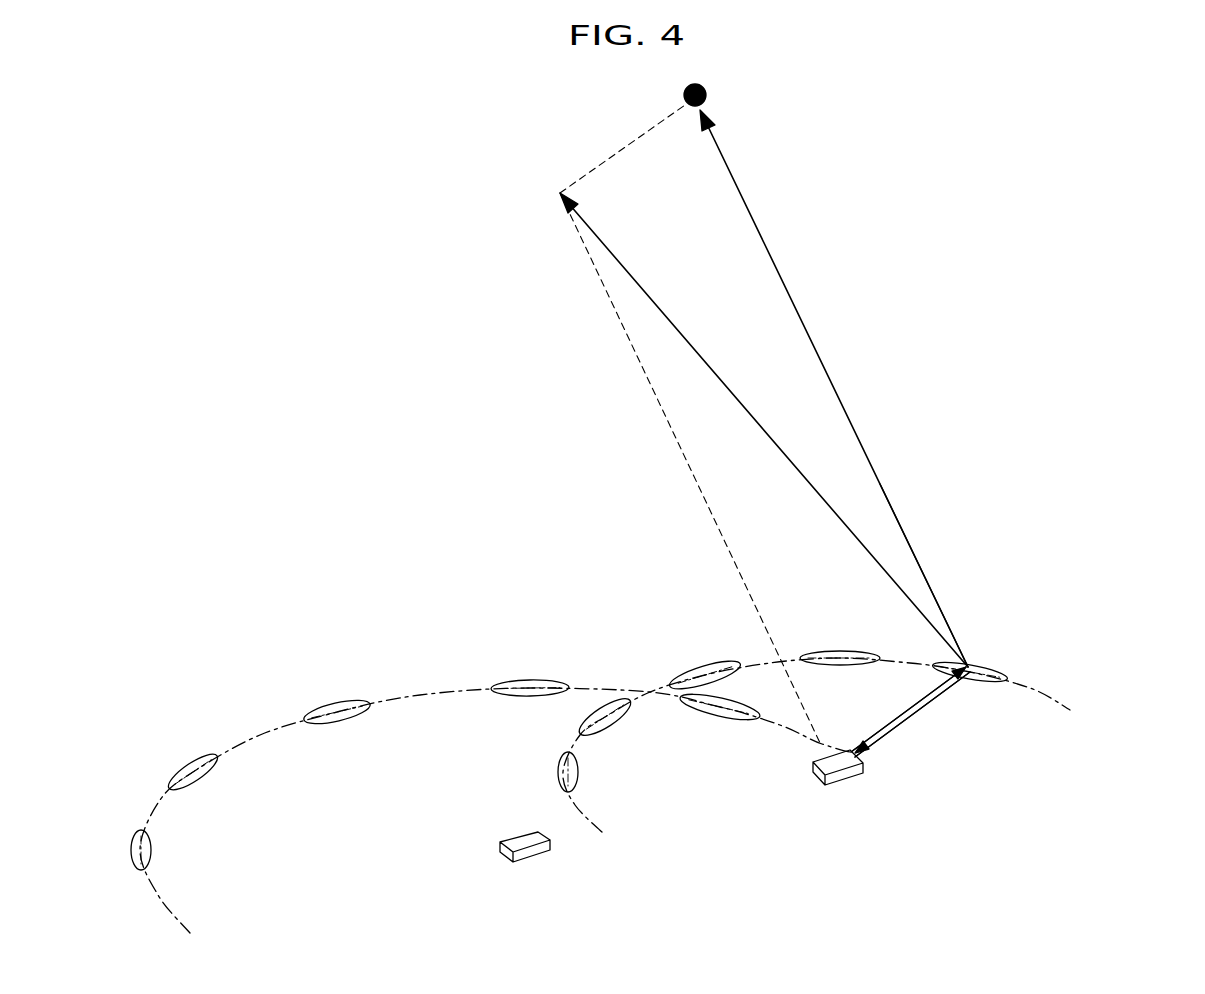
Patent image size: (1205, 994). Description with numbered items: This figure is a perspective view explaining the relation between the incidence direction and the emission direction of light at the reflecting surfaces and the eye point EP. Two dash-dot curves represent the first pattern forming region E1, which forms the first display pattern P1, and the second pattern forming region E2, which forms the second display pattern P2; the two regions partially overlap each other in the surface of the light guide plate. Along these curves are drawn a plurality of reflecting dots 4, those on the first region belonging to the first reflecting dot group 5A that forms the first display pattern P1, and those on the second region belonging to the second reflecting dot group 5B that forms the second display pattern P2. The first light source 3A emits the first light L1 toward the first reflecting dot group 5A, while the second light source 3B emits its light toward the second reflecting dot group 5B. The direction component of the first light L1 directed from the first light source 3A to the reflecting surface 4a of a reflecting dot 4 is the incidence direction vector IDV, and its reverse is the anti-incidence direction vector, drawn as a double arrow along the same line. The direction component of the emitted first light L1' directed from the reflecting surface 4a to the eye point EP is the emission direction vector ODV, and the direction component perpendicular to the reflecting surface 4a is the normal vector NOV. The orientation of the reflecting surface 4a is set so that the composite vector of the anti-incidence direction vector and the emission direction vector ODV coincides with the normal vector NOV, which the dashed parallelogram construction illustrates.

The eye point EP is at (707, 97).
The emission direction vector ODV is at (810, 338).
The normal vector NOV is at (707, 368).
The first light (emitted) L1' is at (922, 538).
The first light L1 is at (910, 753).
The reflecting dot 4 is at (612, 721).
The first reflecting dot group 5A is at (989, 662).
The second reflecting dot group 5B is at (322, 688).
The reflecting surface 4a is at (987, 681).
The incidence direction vector IDV is at (919, 692).
The first pattern forming region E1 is at (875, 726).
The first display pattern P1 is at (1065, 703).
The second pattern forming region E2 is at (495, 757).
The second display pattern P2 is at (430, 692).
The first light source 3A is at (843, 778).
The second light source 3B is at (533, 855).